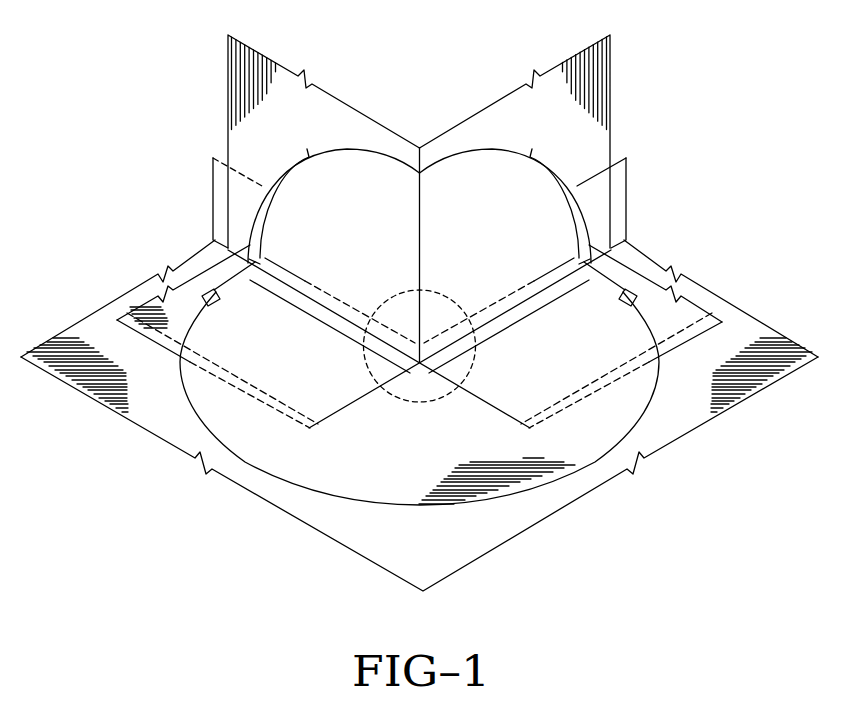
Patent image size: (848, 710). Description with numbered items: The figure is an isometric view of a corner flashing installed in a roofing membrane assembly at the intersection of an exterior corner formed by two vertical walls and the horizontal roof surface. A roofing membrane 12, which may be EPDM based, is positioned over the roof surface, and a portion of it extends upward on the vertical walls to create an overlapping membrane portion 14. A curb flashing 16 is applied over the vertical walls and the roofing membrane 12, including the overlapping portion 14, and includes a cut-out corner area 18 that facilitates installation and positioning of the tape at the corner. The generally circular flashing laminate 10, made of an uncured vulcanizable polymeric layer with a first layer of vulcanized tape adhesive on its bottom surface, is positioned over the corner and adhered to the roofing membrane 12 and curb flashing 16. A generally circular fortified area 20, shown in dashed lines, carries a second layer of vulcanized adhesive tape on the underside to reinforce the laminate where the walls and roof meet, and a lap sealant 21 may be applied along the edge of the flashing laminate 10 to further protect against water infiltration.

The flashing laminate 10 is at (489, 143).
The roofing membrane 12 is at (757, 352).
The overlapping membrane portion 14 is at (620, 202).
The curb flashing 16 is at (249, 101).
The cut-out corner area 18 is at (476, 415).
The fortified area 20 is at (362, 370).
The lap sealant 21 is at (282, 172).